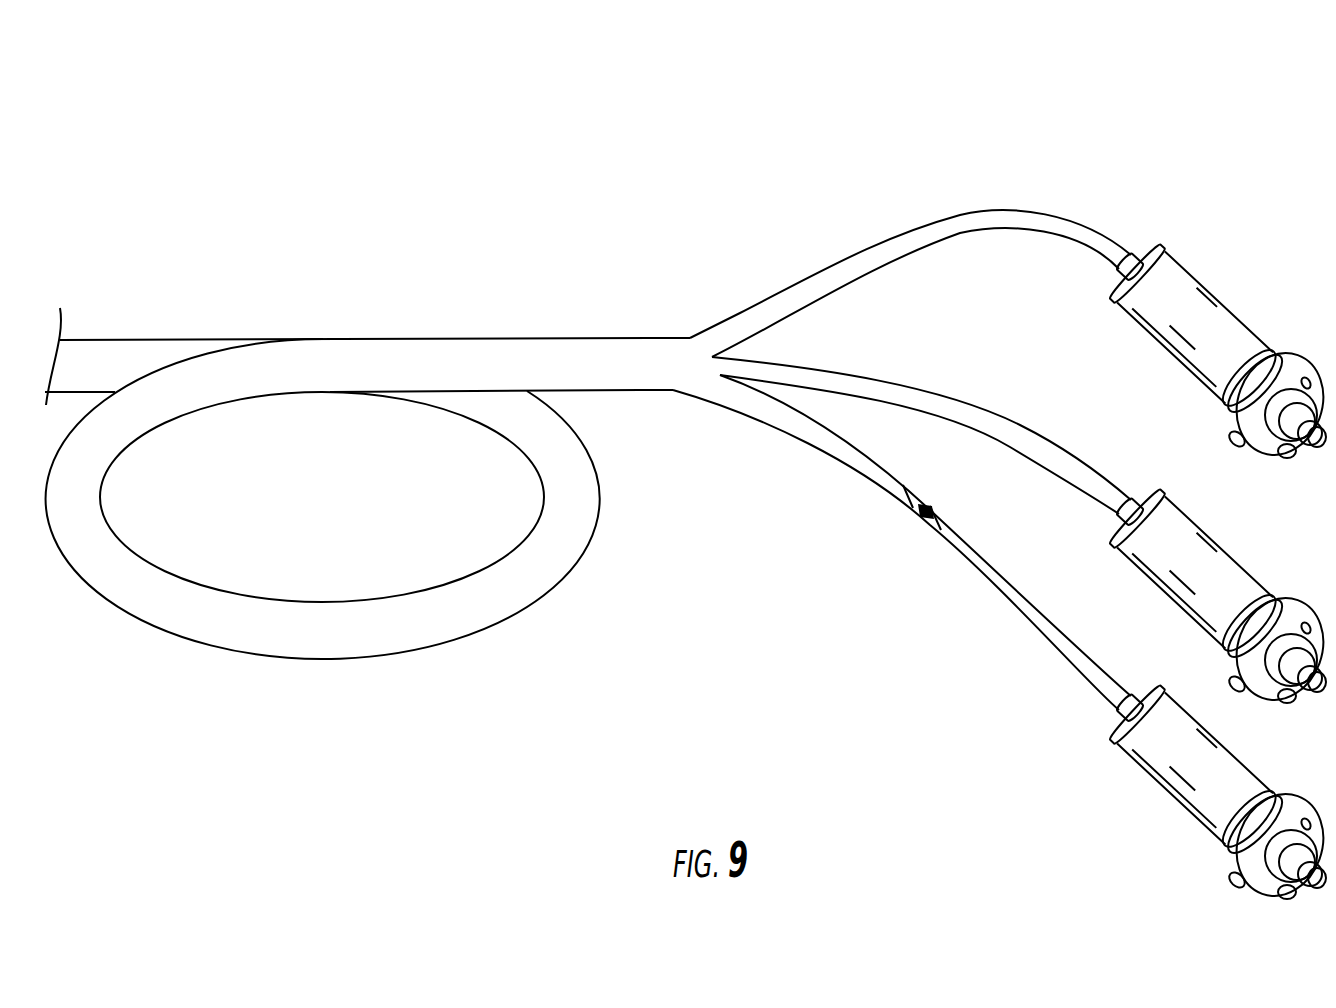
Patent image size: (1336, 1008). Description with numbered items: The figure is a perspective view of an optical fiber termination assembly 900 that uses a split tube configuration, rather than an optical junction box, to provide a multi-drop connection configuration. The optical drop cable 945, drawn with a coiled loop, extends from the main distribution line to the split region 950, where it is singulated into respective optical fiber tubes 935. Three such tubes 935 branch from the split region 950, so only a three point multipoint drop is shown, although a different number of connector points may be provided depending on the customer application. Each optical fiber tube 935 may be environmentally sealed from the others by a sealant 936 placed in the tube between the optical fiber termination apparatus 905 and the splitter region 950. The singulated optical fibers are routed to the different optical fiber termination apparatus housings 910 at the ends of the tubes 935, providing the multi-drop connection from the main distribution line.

The optical fiber termination assembly 900 is at (698, 88).
The optical fiber termination apparatus 905 is at (1163, 219).
The optical fiber termination apparatus housing 910 is at (1223, 304).
The optical fiber tube 935 is at (870, 247).
The sealant 936 is at (917, 513).
The optical drop cable 945 is at (490, 623).
The split region 950 is at (690, 367).